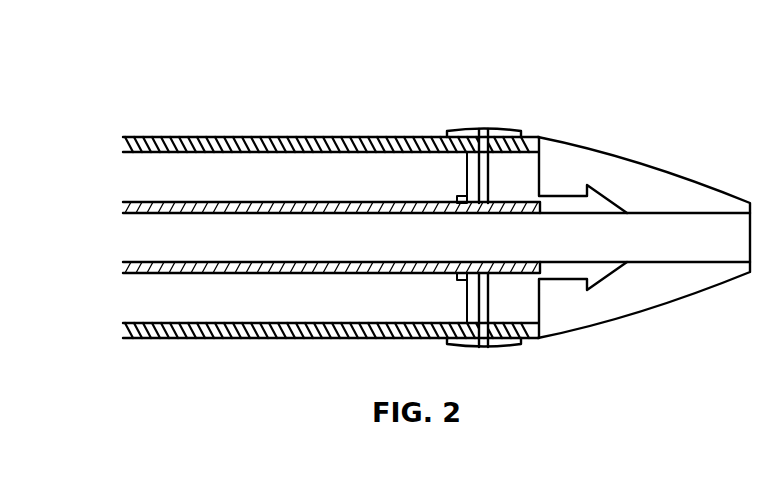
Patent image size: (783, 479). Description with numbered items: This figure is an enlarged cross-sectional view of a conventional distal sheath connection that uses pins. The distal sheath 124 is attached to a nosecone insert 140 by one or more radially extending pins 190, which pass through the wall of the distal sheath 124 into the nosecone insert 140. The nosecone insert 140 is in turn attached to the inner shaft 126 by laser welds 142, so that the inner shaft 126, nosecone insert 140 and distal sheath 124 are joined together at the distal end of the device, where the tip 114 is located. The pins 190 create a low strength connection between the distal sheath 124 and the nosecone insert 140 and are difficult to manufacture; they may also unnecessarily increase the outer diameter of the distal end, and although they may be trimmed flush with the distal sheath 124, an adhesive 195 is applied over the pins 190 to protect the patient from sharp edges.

The nose piece / tip 114 is at (678, 197).
The distal sheath 124 is at (205, 143).
The inner shaft 126 is at (195, 265).
The nosecone insert 140 is at (467, 180).
The laser welds 142 is at (463, 277).
The pins 190 is at (483, 165).
The adhesive 195 is at (484, 127).